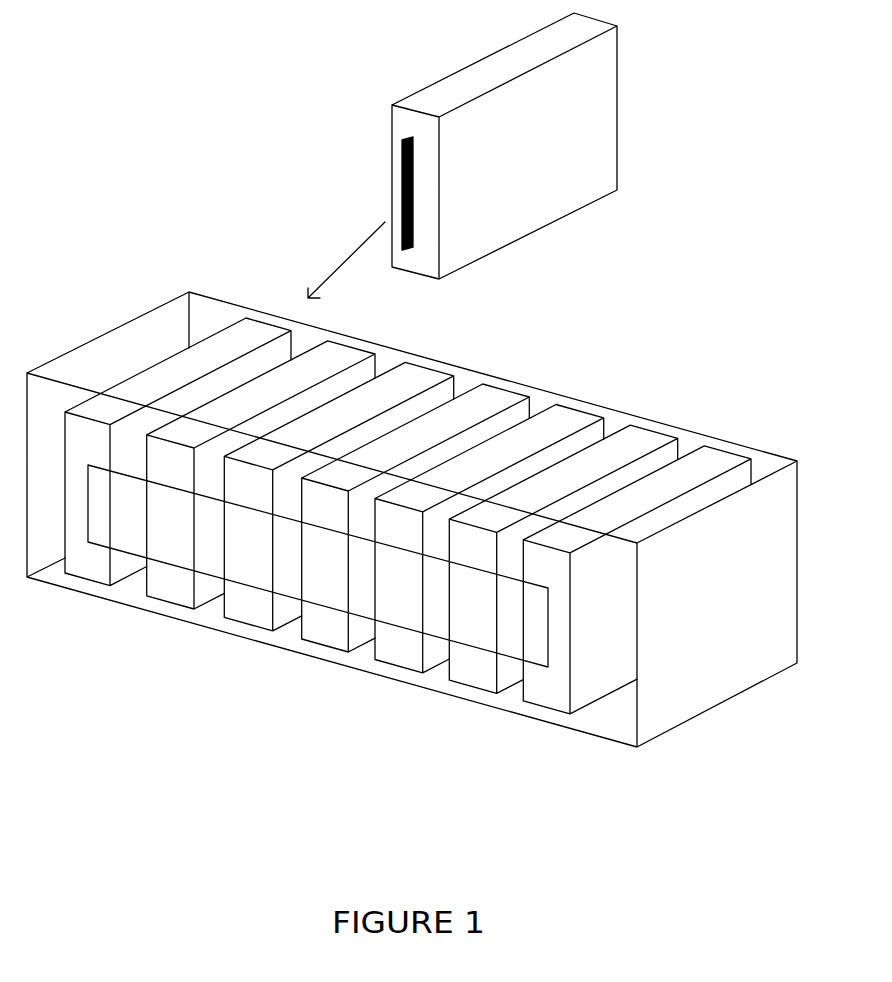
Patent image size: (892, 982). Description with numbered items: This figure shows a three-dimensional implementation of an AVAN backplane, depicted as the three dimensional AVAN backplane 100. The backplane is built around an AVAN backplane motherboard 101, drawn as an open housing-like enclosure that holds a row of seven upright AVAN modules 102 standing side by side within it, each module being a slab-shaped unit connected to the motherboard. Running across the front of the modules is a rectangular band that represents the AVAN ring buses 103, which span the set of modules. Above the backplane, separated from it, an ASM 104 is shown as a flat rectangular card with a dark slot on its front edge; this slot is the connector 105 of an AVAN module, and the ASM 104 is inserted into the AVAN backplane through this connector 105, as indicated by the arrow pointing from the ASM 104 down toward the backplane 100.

The three dimensional AVAN backplane 100 is at (742, 182).
The AVAN backplane motherboard 101 is at (120, 327).
The AVAN modules 102 is at (86, 571).
The AVAN ring buses 103 is at (548, 622).
The ASM 104 is at (463, 89).
The connector 105 is at (403, 178).